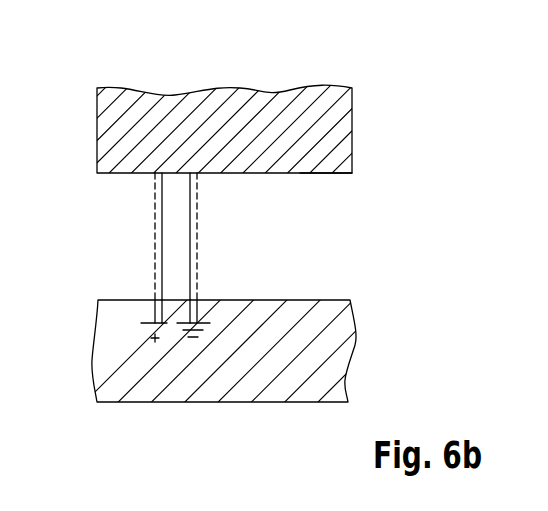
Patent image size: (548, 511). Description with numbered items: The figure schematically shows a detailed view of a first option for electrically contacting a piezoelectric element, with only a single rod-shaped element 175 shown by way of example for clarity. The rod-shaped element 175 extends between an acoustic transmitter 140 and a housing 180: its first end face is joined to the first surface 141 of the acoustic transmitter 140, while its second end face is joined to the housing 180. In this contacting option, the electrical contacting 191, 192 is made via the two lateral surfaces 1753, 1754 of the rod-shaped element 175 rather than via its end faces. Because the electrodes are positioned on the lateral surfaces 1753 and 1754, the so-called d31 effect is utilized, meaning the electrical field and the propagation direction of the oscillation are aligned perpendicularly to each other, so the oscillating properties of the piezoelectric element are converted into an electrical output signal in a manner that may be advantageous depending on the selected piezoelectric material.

The acoustic transmitter 140 is at (250, 105).
The first surface 141 is at (305, 187).
The rod-shaped element 175 is at (175, 244).
The lateral surface 1753 is at (197, 213).
The lateral surface 1754 is at (155, 213).
The housing 180 is at (215, 387).
The electrical contacting 191 is at (153, 318).
The electrical contacting 192 is at (200, 318).